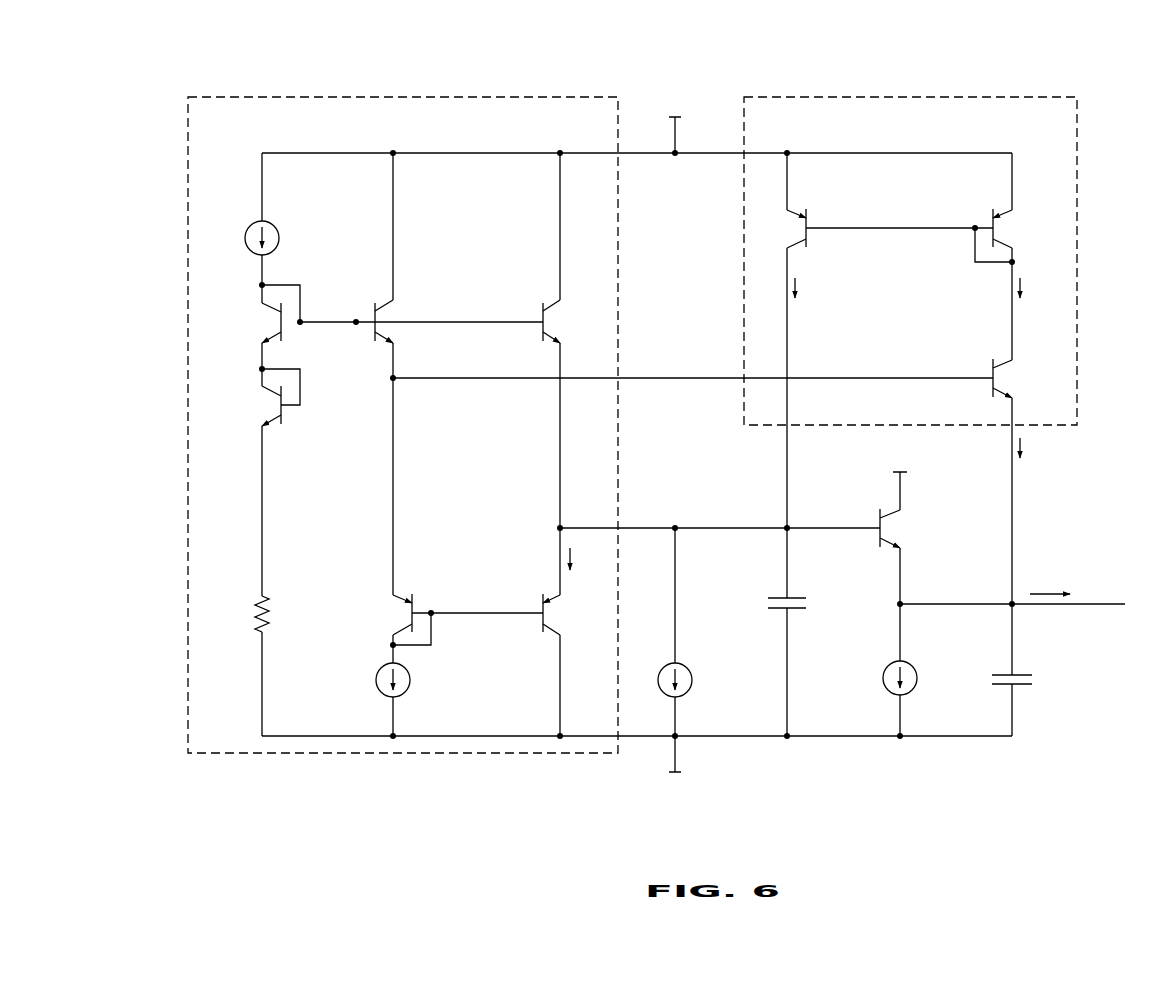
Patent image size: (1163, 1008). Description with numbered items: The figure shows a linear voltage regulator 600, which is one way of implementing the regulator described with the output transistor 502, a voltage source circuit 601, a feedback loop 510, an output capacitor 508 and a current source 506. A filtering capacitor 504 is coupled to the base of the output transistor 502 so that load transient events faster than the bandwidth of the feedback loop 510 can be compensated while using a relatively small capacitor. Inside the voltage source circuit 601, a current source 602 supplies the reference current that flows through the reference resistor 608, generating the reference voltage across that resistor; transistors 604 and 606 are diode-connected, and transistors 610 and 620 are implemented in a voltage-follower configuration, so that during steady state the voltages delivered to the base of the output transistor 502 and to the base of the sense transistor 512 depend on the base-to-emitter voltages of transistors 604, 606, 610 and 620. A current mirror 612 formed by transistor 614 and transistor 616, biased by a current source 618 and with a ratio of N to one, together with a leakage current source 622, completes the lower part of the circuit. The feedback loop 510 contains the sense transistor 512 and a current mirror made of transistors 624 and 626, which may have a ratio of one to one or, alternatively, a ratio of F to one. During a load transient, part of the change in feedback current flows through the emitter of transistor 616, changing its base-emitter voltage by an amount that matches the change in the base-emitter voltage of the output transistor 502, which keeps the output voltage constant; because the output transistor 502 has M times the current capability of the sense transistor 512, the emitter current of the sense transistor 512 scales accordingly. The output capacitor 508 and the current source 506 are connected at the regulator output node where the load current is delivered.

The linear voltage regulator 600 is at (140, 57).
The voltage source circuit 601 is at (545, 97).
The reference current source 602 is at (279, 240).
The transistor 604 is at (262, 305).
The transistor 606 is at (262, 388).
The reference resistor 608 is at (268, 599).
The transistor 610 is at (393, 303).
The current mirror 612 is at (488, 559).
The current mirror 614 is at (412, 599).
The transistor 616 is at (549, 608).
The current source 618 is at (410, 680).
The transistor 620 is at (543, 305).
The leakage current source 622 is at (692, 679).
The transistor 624 is at (806, 213).
The transistor 626 is at (993, 213).
The feedback loop 510 is at (1077, 290).
The sense transistor 512 is at (993, 361).
The output transistor 502 is at (880, 512).
The filtering capacitor 504 is at (768, 598).
The current source 506 is at (885, 691).
The output capacitor 508 is at (1028, 673).